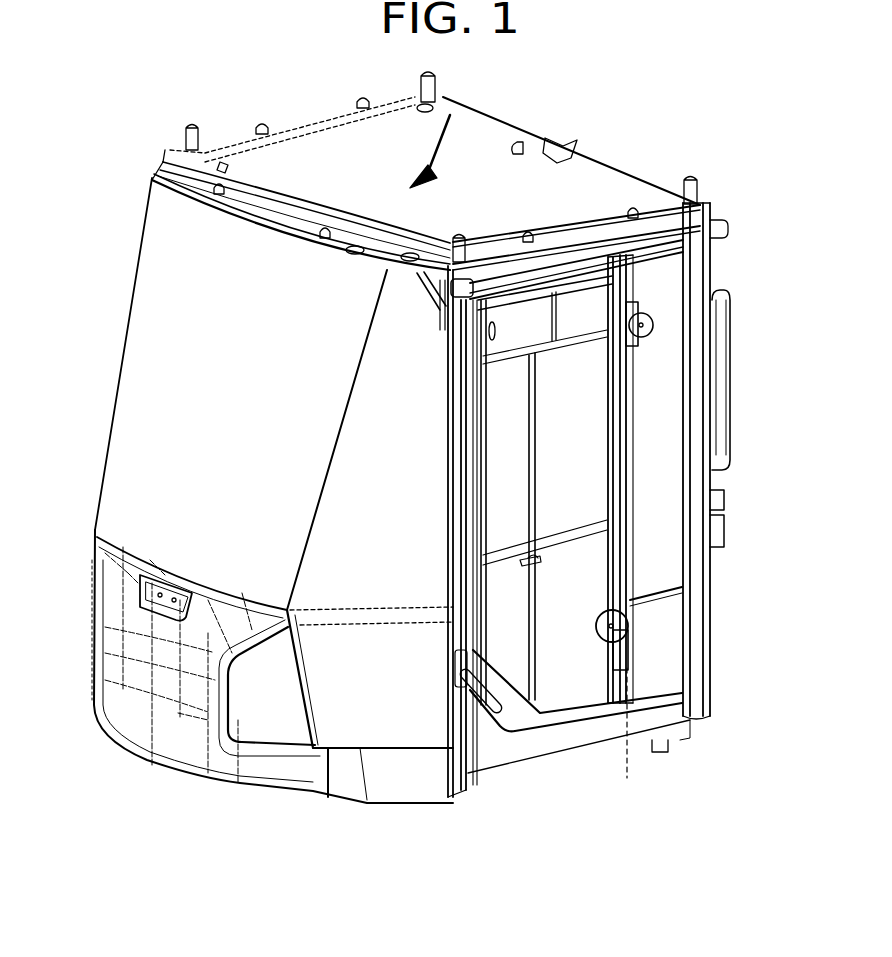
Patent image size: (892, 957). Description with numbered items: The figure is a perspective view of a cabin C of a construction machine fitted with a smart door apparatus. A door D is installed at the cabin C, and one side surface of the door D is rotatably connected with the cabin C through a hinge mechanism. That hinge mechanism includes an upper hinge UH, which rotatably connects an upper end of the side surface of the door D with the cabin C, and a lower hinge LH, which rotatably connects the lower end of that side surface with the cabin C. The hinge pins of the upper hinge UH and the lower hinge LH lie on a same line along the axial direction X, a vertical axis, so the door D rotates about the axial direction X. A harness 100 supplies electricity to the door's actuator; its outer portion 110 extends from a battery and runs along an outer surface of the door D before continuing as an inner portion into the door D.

The cabin C is at (147, 234).
The door D is at (577, 340).
The harness 100 is at (666, 384).
The outer portion 110 is at (625, 565).
The upper hinge UH is at (637, 332).
The lower hinge LH is at (630, 663).
The axial direction X is at (627, 737).